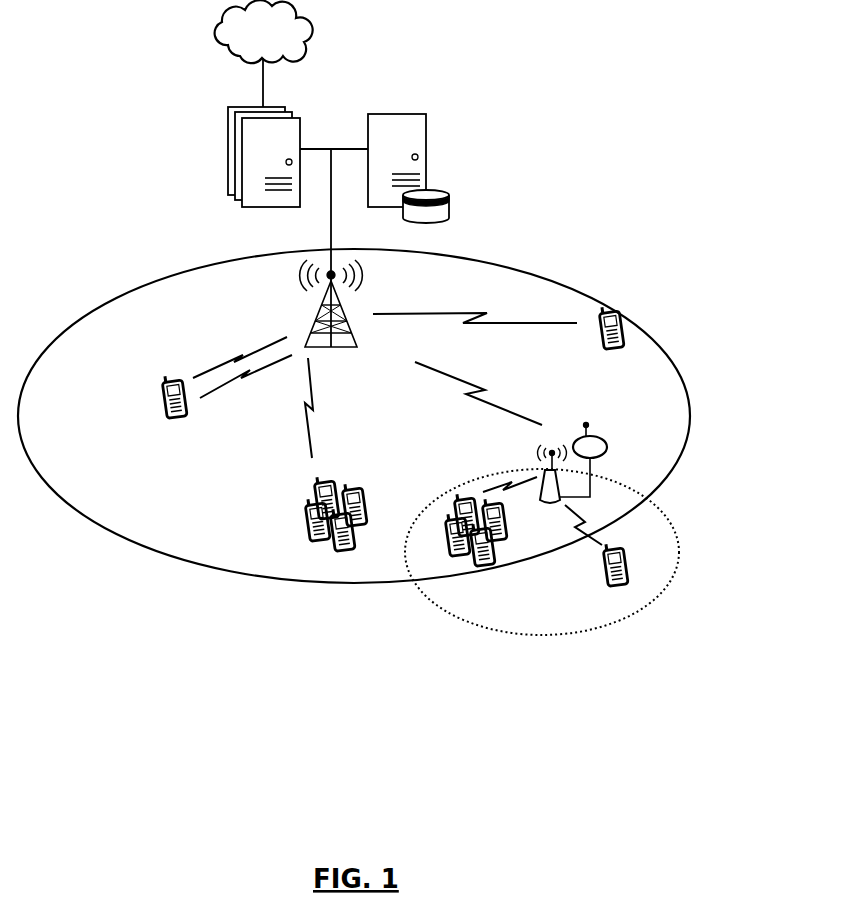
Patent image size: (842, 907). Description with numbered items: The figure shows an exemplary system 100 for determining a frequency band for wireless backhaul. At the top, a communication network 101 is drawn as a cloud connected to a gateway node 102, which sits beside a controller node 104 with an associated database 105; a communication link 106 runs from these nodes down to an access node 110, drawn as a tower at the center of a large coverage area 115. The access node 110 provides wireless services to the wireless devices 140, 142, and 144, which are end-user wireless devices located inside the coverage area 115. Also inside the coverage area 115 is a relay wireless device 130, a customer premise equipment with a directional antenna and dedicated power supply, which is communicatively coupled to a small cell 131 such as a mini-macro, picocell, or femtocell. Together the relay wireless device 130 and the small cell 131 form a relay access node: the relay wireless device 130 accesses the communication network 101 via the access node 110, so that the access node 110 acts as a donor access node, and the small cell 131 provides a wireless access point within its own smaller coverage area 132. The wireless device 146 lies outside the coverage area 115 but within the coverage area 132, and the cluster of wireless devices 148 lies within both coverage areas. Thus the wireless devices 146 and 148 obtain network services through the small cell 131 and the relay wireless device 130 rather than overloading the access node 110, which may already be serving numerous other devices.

The system 100 is at (358, 60).
The communication network 101 is at (264, 53).
The gateway node 102 is at (230, 150).
The controller node 104 is at (432, 157).
The database 105 is at (460, 193).
The communication link 106 is at (317, 248).
The access node 110 is at (346, 315).
The coverage area 115 is at (373, 416).
The relay wireless device 130 is at (542, 429).
The small cell 131 is at (521, 473).
The coverage area 132 is at (581, 552).
The wireless device 140 is at (498, 330).
The wireless device 142 is at (186, 381).
The wireless device 144 is at (296, 454).
The wireless device 146 is at (582, 559).
The wireless devices 148 is at (508, 531).